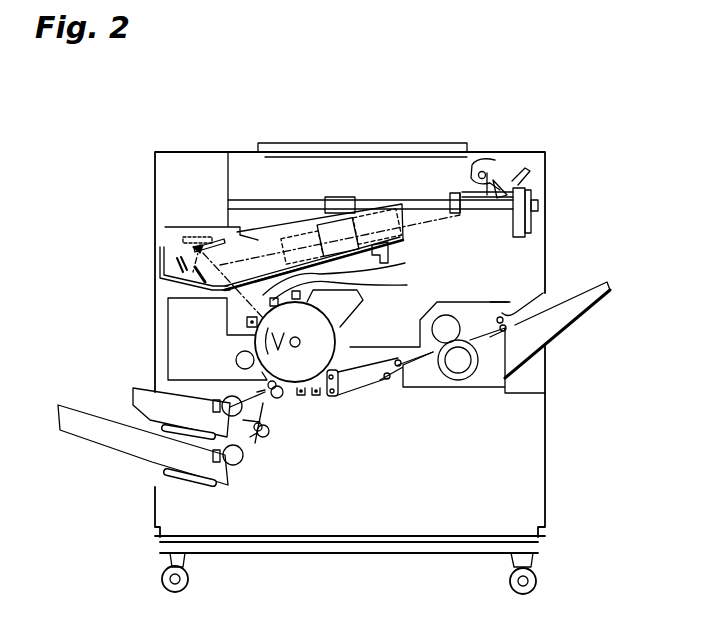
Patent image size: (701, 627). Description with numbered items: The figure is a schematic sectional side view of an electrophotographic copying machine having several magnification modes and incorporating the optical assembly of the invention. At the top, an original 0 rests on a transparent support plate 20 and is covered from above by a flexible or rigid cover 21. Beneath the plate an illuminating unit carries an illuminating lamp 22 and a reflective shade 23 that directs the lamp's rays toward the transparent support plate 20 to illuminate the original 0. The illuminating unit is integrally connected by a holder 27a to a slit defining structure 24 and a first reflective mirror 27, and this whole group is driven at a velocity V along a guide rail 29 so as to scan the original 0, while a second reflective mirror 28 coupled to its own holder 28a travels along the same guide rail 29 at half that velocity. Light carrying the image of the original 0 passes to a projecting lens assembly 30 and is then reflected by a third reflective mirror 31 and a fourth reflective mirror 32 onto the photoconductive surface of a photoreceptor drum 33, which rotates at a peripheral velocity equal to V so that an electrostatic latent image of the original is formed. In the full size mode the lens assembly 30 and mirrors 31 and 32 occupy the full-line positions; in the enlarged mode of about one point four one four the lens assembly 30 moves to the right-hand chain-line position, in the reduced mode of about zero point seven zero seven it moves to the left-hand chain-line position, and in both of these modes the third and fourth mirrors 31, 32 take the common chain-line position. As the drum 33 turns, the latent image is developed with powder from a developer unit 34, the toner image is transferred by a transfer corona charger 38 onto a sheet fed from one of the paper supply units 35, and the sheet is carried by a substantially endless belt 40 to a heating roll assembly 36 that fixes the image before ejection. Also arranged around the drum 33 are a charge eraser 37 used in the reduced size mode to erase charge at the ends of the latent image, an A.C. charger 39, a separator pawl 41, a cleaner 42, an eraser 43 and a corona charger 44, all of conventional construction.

The original 0 is at (447, 163).
The transparent support plate 20 is at (452, 157).
The cover 21 is at (438, 148).
The illuminating lamp 22 is at (488, 174).
The reflective shade 23 is at (483, 158).
The slit defining structure 24 is at (523, 172).
The first reflective mirror 27 is at (528, 183).
The holder 27a is at (443, 195).
The second reflective mirror 28 is at (530, 214).
The holder 28a is at (517, 240).
The guide rail 29 is at (378, 203).
The projecting lens assembly 30 is at (380, 231).
The third reflective mirror 31 is at (190, 272).
The fourth reflective mirror 32 is at (218, 230).
The photoreceptor drum 33 is at (337, 338).
The developer unit 34 is at (238, 358).
The paper supply units 35 is at (135, 445).
The heating roll assembly 36 is at (458, 367).
The charge eraser 37 is at (257, 320).
The transfer corona charger 38 is at (300, 395).
The A.C. charger 39 is at (313, 395).
The endless belt 40 is at (367, 387).
The separator pawl 41 is at (338, 393).
The cleaner 42 is at (345, 300).
The eraser 43 is at (360, 290).
The corona charger 44 is at (385, 268).